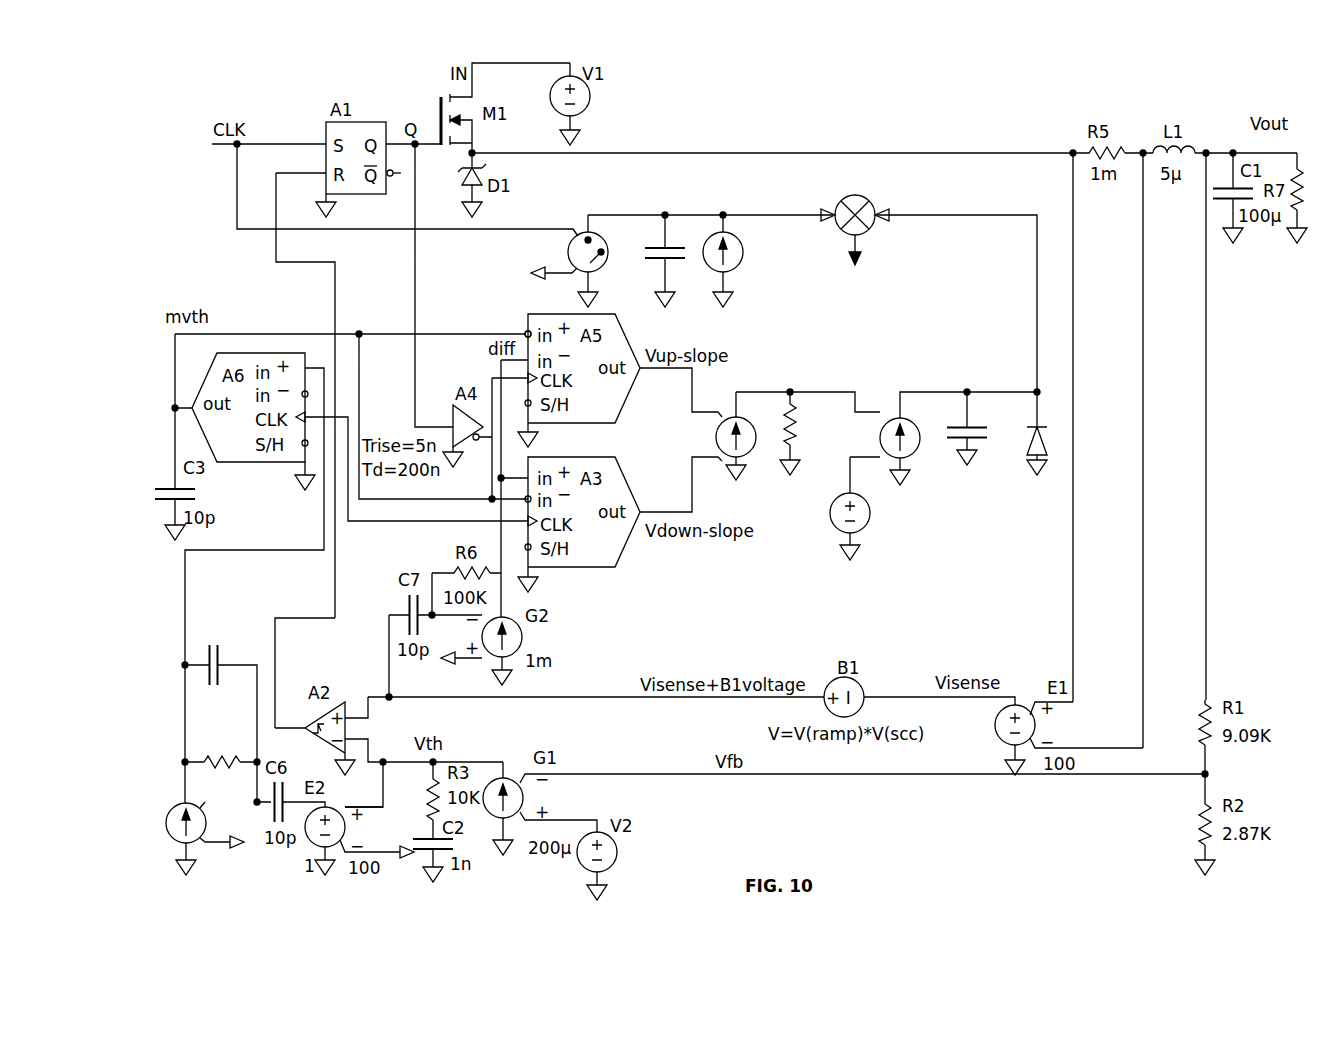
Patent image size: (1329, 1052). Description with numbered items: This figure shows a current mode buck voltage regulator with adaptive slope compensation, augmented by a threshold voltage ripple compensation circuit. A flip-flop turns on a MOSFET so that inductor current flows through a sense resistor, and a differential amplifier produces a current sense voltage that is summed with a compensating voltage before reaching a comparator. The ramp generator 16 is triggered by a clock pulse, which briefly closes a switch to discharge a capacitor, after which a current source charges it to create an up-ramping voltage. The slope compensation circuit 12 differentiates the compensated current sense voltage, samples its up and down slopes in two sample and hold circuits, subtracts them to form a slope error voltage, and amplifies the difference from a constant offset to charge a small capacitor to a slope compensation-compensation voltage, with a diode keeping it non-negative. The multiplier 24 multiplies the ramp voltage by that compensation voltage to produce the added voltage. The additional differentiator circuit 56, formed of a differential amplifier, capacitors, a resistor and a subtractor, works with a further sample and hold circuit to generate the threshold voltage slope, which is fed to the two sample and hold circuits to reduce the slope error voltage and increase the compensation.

The slope compensation circuit 12 is at (882, 583).
The ramp generator 16 is at (714, 206).
The multiplier 24 is at (860, 196).
The differentiator circuit 56 is at (175, 738).